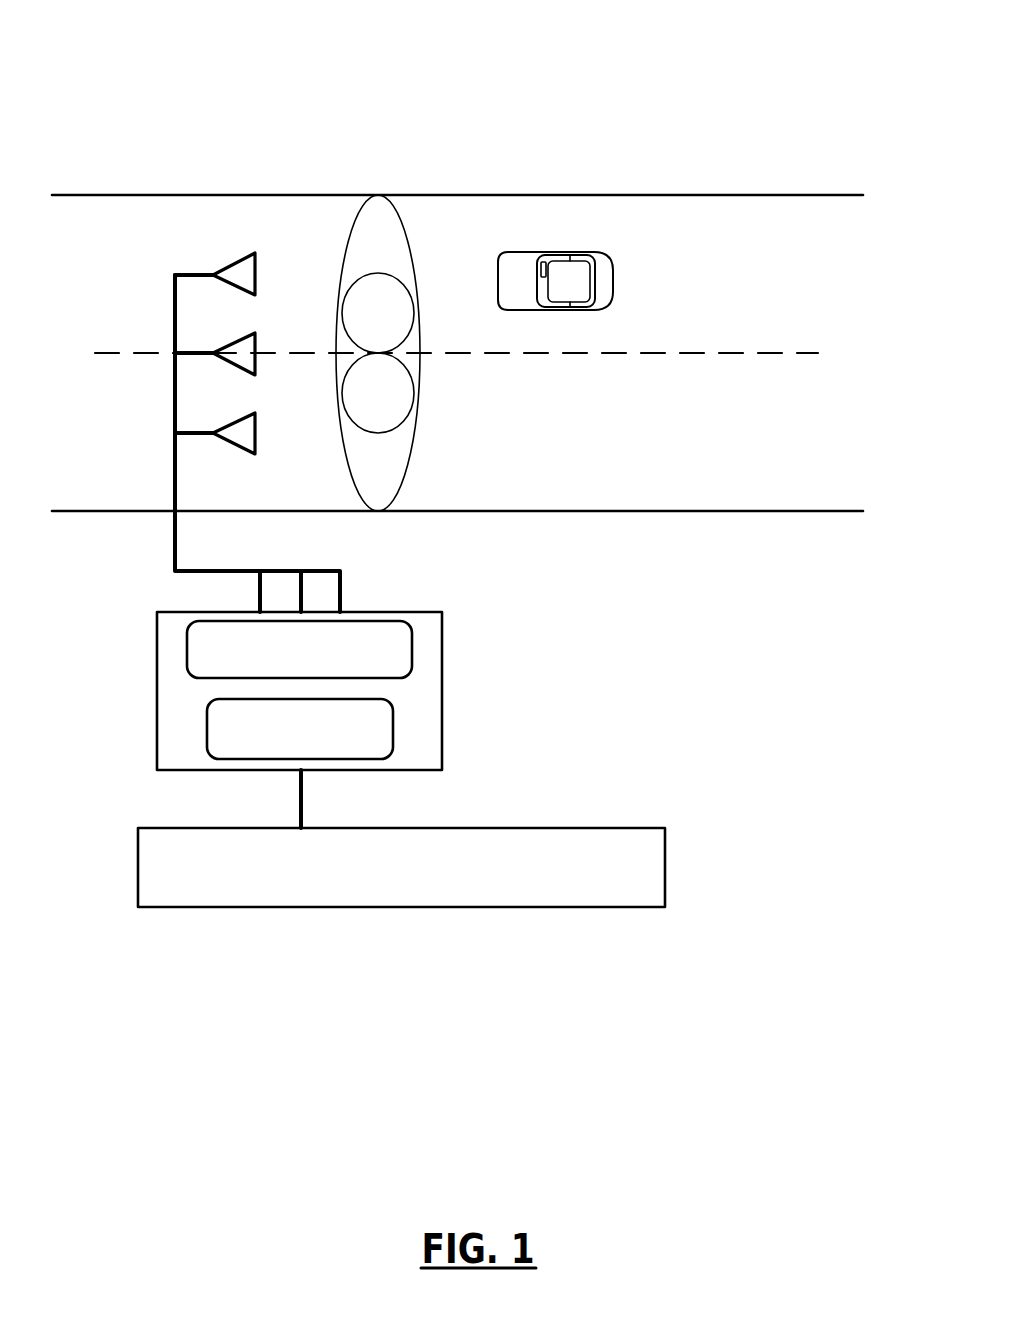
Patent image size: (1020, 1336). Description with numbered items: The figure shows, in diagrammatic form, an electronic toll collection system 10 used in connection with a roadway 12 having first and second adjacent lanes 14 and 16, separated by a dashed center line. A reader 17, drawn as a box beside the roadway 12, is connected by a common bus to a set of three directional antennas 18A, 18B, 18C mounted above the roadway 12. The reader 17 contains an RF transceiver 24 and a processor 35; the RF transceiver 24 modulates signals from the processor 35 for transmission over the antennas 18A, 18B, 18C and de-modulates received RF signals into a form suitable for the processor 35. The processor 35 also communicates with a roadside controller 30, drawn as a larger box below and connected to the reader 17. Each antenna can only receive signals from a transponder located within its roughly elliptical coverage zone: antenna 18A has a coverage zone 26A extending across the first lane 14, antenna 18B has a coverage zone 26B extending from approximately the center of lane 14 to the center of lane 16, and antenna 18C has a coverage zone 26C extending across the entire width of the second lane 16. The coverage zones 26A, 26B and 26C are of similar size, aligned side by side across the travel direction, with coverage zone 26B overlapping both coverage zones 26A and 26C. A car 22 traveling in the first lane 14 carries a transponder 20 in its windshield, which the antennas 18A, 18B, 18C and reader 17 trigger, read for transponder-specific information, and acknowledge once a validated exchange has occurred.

The electronic toll collection system 10 is at (230, 78).
The roadway 12 is at (808, 150).
The first lane 14 is at (823, 283).
The second lane 16 is at (826, 439).
The reader 17 is at (155, 652).
The antenna 18A is at (247, 258).
The antenna 18B is at (247, 335).
The antenna 18C is at (238, 447).
The transponder 20 is at (545, 262).
The car 22 is at (613, 285).
The RF transceiver 24 is at (412, 648).
The coverage zone 26A is at (406, 215).
The coverage zone 26B is at (420, 368).
The coverage zone 26C is at (420, 450).
The roadside controller 30 is at (568, 828).
The processor 35 is at (393, 730).